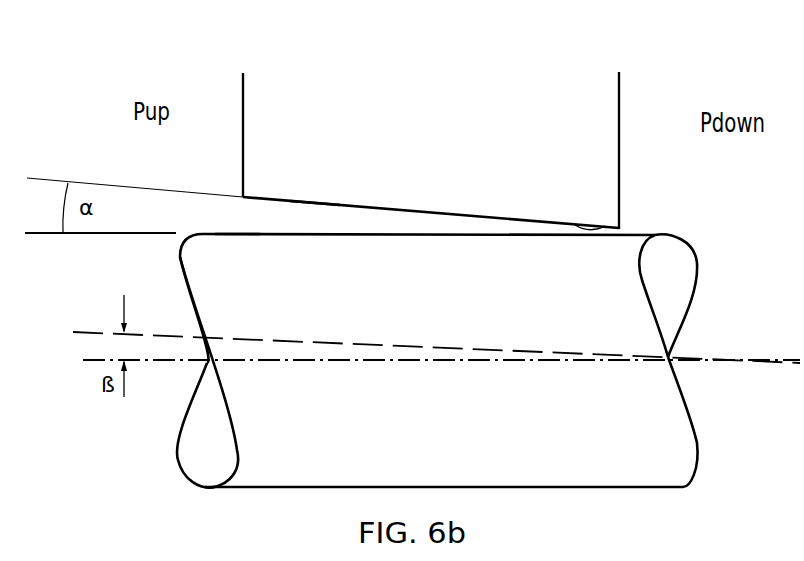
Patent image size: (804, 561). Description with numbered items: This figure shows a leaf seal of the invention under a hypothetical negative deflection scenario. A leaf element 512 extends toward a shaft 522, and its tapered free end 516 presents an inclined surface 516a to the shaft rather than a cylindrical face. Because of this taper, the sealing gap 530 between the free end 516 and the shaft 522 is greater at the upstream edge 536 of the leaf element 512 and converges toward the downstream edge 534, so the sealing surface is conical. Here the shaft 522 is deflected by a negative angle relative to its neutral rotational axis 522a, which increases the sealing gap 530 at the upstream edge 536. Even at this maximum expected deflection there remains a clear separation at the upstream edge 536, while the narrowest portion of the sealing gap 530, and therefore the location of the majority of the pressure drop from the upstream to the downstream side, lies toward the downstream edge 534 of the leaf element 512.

The leaf element 512 is at (570, 90).
The free end 516 is at (460, 122).
The inclined surface of free end 516a is at (487, 187).
The shaft 522 is at (458, 307).
The neutral rotational axis 522a is at (340, 312).
The sealing gap 530 is at (325, 220).
The downstream edge 534 is at (607, 226).
The upstream edge 536 is at (237, 217).